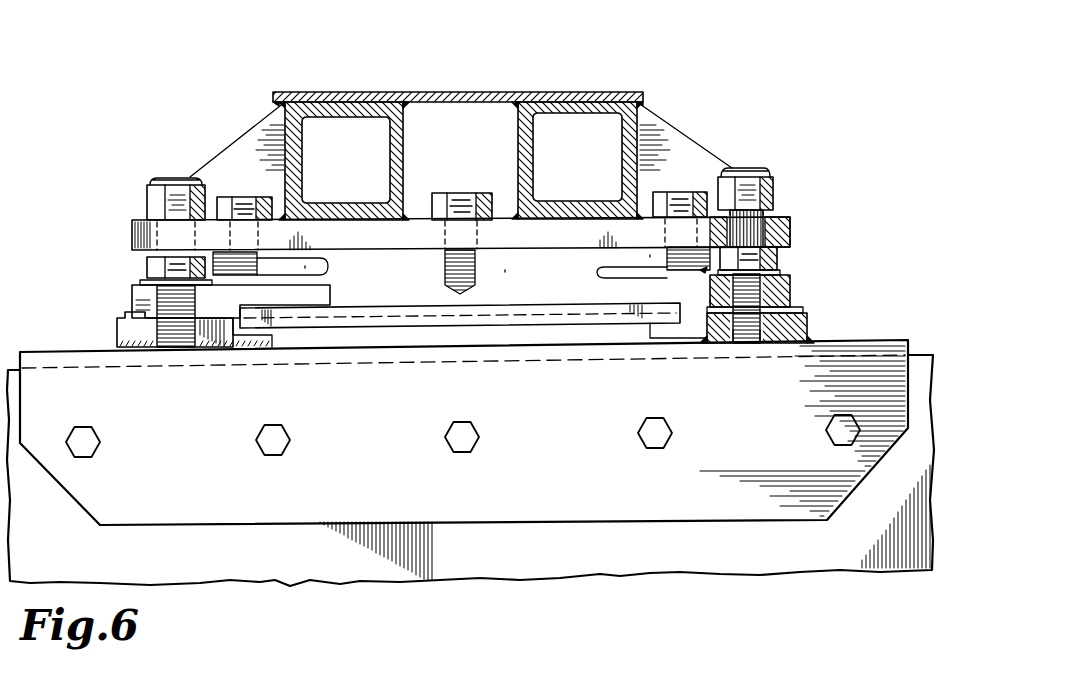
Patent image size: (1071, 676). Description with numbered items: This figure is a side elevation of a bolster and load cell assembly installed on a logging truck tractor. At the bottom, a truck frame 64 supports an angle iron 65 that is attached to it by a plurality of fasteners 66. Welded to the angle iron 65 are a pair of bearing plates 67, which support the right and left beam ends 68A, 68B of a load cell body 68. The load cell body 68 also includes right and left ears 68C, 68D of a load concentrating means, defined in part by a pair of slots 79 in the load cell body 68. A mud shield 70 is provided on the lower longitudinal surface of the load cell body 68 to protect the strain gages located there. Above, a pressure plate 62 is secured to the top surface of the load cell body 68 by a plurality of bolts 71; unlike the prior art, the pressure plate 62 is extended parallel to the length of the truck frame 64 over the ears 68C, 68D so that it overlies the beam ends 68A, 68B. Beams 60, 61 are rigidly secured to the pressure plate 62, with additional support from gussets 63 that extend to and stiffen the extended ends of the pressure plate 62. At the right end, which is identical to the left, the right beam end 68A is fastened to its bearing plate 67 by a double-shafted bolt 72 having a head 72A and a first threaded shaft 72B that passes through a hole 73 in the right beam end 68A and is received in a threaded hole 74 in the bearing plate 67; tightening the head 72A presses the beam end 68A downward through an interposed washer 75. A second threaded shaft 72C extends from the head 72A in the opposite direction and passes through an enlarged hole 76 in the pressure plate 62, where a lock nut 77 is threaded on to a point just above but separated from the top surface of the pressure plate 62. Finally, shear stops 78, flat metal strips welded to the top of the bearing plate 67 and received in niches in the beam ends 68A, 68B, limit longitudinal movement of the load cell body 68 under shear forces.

The beam 60 is at (343, 92).
The beam 61 is at (572, 92).
The pressure plate 62 is at (417, 230).
The gusset 63 is at (217, 163).
The truck frame 64 is at (917, 355).
The angle iron 65 is at (862, 360).
The fastener 66 is at (262, 440).
The bearing plate 67 is at (122, 330).
The load cell body 68 is at (505, 272).
The right beam end 68A is at (795, 290).
The left beam end 68B is at (140, 300).
The right ear 68C is at (650, 257).
The left ear 68D is at (305, 268).
The mud shield 70 is at (500, 318).
The bolt 71 is at (243, 197).
The double-shafted bolt 72 is at (704, 271).
The head 72A is at (782, 262).
The first threaded shaft 72B is at (753, 303).
The second threaded shaft 72C is at (775, 207).
The hole 73 is at (708, 300).
The threaded hole 74 is at (713, 343).
The washer 75 is at (780, 272).
The enlarged hole 76 is at (157, 237).
The lock nut 77 is at (153, 195).
The shear stop 78 is at (803, 310).
The slot 79 is at (330, 282).